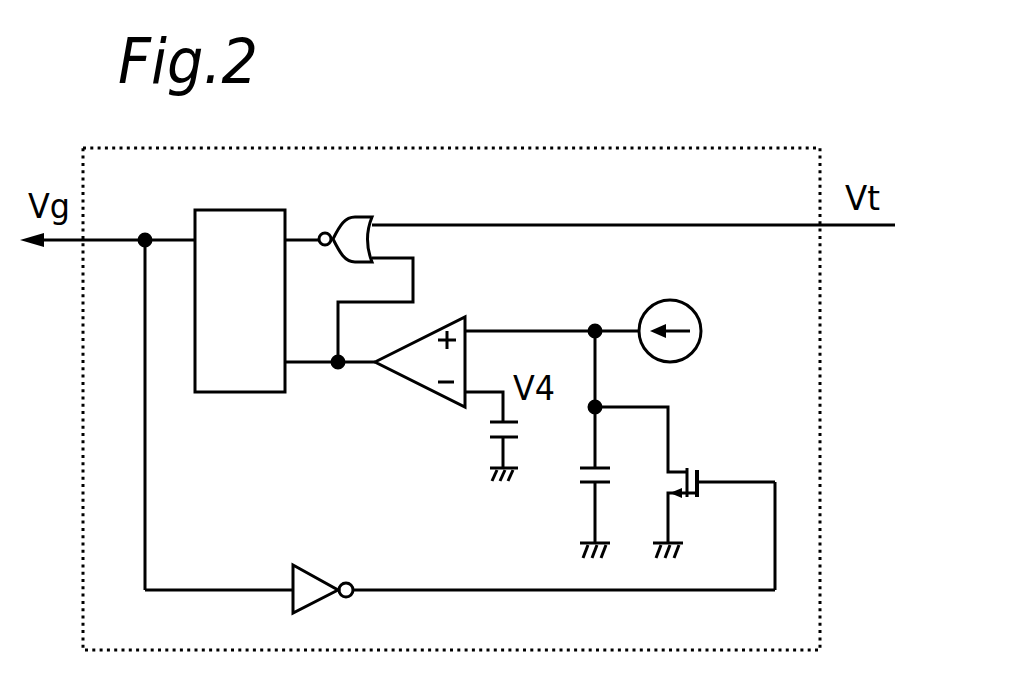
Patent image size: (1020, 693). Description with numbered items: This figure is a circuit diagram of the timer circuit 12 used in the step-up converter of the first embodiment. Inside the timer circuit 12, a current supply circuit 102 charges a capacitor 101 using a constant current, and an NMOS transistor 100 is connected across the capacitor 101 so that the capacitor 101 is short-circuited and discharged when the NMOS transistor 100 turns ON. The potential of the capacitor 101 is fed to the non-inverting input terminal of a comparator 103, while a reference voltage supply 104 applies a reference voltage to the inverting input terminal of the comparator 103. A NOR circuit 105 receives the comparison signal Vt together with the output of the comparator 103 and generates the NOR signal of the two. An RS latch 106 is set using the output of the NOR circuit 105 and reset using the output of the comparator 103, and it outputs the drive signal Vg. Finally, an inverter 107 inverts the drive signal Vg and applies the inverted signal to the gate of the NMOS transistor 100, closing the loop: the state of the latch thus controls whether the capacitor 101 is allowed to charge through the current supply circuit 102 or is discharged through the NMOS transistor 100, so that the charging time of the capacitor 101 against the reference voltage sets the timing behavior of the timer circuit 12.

The timer circuit 12 is at (822, 448).
The NMOS transistor 100 is at (688, 462).
The capacitor 101 is at (577, 477).
The current supply circuit 102 is at (644, 311).
The comparator 103 is at (425, 392).
The reference voltage supply 104 is at (494, 434).
The NOR circuit 105 is at (360, 216).
The RS latch 106 is at (222, 392).
The inverter 107 is at (325, 573).